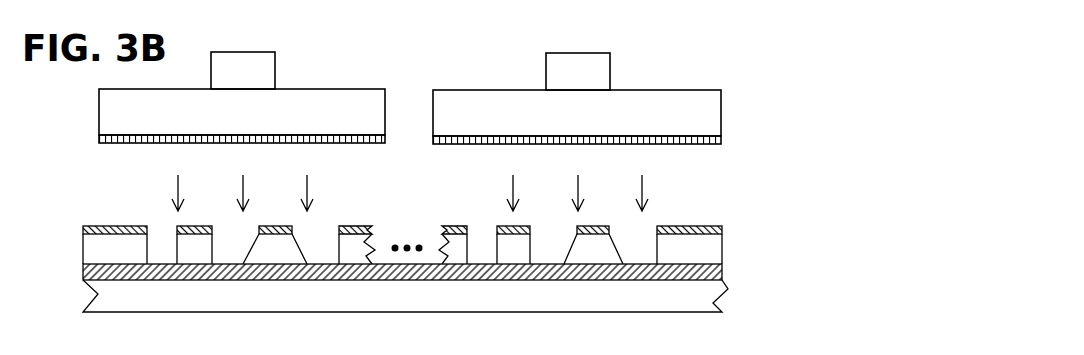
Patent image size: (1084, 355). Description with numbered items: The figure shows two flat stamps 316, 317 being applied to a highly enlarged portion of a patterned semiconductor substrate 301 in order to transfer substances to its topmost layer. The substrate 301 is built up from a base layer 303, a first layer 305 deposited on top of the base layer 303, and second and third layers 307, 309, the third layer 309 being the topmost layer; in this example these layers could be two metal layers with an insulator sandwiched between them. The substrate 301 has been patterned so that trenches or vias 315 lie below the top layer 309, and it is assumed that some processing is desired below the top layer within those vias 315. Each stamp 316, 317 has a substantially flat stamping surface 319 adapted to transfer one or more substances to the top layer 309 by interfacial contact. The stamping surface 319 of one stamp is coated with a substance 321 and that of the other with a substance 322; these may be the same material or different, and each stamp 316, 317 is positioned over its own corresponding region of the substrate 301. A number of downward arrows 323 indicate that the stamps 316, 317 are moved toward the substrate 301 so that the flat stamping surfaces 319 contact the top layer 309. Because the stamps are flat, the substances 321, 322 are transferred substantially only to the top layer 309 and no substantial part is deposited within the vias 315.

The patterned substrate 301 is at (405, 317).
The base layer 303 is at (722, 311).
The first layer 305 is at (722, 272).
The second layer 307 is at (722, 241).
The third layer 309 is at (722, 227).
The vias 315 is at (545, 250).
The flat stamp 316 is at (305, 89).
The flat stamp 317 is at (633, 90).
The stamping surface 319 is at (388, 143).
The substance 321 is at (333, 143).
The substance 322 is at (721, 138).
The downward arrows 323 is at (243, 185).